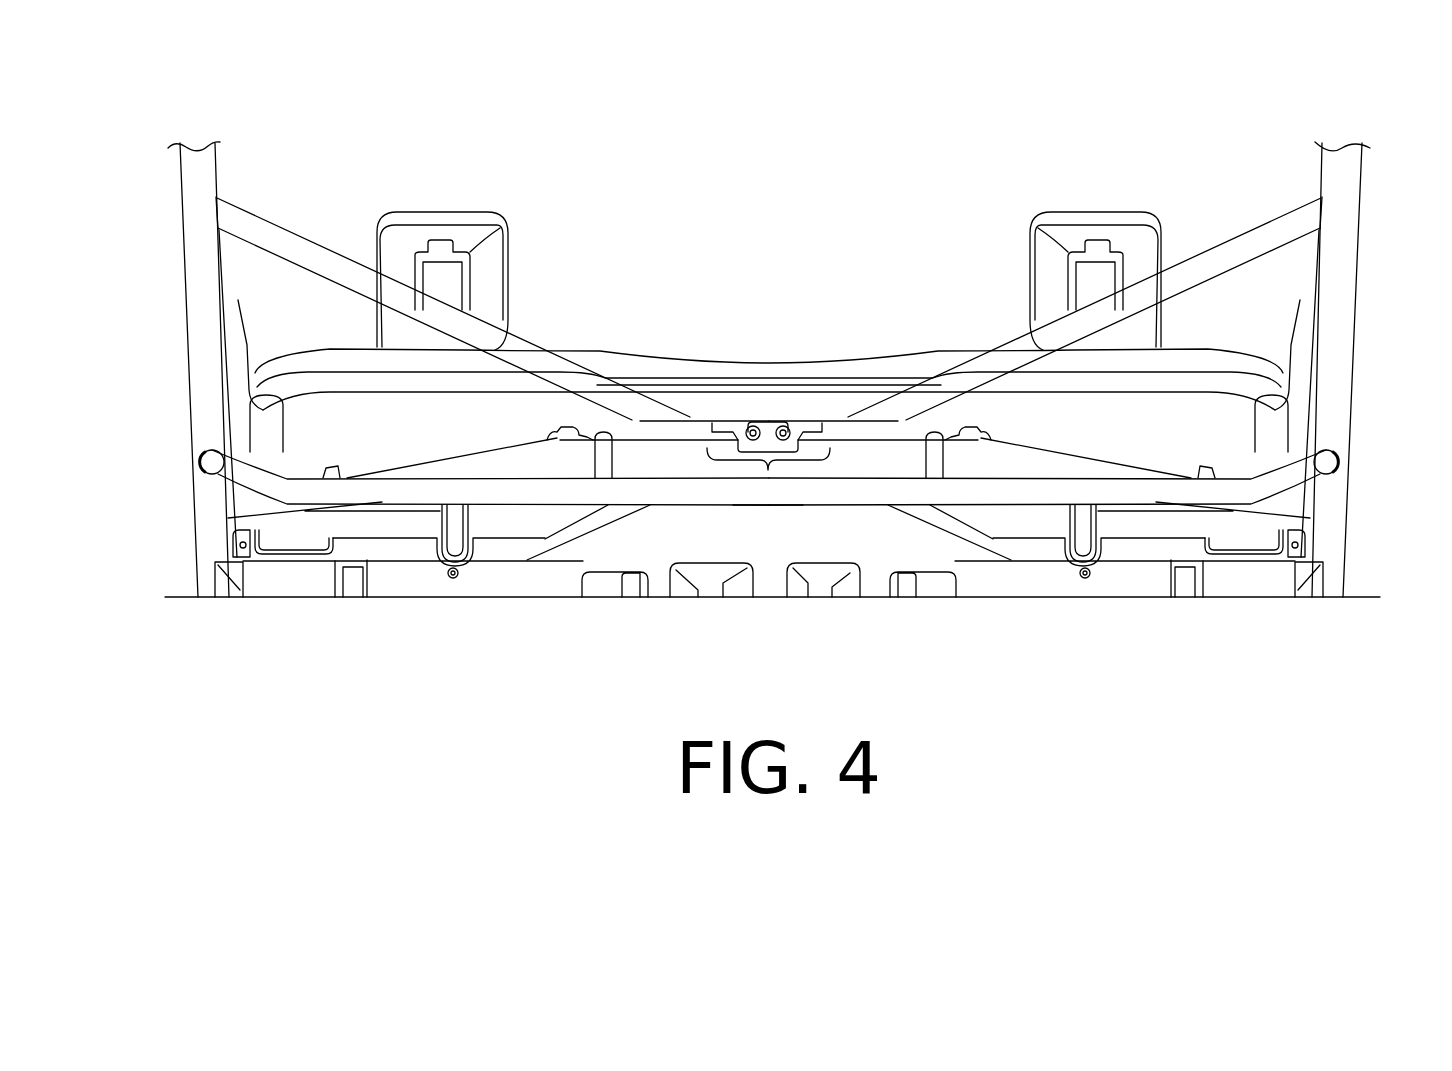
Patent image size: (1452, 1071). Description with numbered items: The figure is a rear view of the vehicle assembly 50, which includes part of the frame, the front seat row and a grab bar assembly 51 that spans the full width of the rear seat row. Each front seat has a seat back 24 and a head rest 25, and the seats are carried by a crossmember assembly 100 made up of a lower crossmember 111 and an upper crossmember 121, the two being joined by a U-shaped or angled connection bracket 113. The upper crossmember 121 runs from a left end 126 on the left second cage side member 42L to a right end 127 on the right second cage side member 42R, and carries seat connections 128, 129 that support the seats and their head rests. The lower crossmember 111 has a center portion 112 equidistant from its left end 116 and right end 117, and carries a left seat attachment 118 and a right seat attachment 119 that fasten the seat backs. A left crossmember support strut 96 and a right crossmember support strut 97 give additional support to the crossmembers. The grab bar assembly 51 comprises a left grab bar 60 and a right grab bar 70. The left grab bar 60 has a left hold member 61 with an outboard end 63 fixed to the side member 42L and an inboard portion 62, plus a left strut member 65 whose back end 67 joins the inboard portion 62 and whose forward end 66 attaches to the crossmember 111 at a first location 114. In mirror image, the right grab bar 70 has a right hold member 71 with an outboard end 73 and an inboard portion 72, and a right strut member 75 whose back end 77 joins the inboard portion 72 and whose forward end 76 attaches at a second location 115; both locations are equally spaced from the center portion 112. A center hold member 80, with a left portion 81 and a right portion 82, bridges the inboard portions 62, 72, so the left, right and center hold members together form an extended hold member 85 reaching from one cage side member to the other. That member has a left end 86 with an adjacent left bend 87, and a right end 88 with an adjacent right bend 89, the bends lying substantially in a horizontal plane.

The vehicle assembly 50 is at (308, 196).
The seat back 24 is at (322, 358).
The head rest 25 is at (445, 215).
The left second cage side member 42L is at (190, 288).
The right second cage side member 42R is at (1348, 288).
The left end 126 is at (213, 204).
The right end 127 is at (1325, 204).
The seat connection 128 is at (488, 240).
The seat connection 129 is at (1050, 240).
The crossmember 121 is at (541, 322).
The crossmember assembly 100 is at (769, 430).
The crossmember 111 is at (372, 526).
The first location 114 is at (588, 434).
The second location 115 is at (950, 434).
The forward end 66 is at (600, 418).
The forward end 76 is at (938, 418).
The left strut member 65 is at (653, 453).
The right strut member 75 is at (885, 453).
The connection bracket 113 is at (748, 422).
The left seat attachment 118 is at (558, 424).
The right seat attachment 119 is at (980, 424).
The back end 67 is at (608, 456).
The back end 77 is at (930, 456).
The grab bar assembly 51 is at (767, 528).
The left grab bar 60 is at (283, 440).
The right grab bar 70 is at (1255, 440).
The left end 86 is at (427, 478).
The outboard end 63 is at (212, 475).
The outboard end 73 is at (1110, 478).
The right end 88 is at (1326, 475).
The left end 116 is at (238, 512).
The right end 117 is at (1300, 512).
The left bend 87 is at (305, 492).
The right bend 89 is at (1232, 493).
The left crossmember support strut 96 is at (458, 540).
The right crossmember support strut 97 is at (1087, 540).
The left hold member 61 is at (510, 497).
The extended hold member 85 is at (768, 576).
The inboard portion 62 is at (592, 495).
The left portion 81 is at (615, 490).
The center hold member 80 is at (756, 528).
The center portion 112 is at (768, 470).
The right portion 82 is at (923, 492).
The inboard portion 72 is at (947, 492).
The right hold member 71 is at (1023, 492).